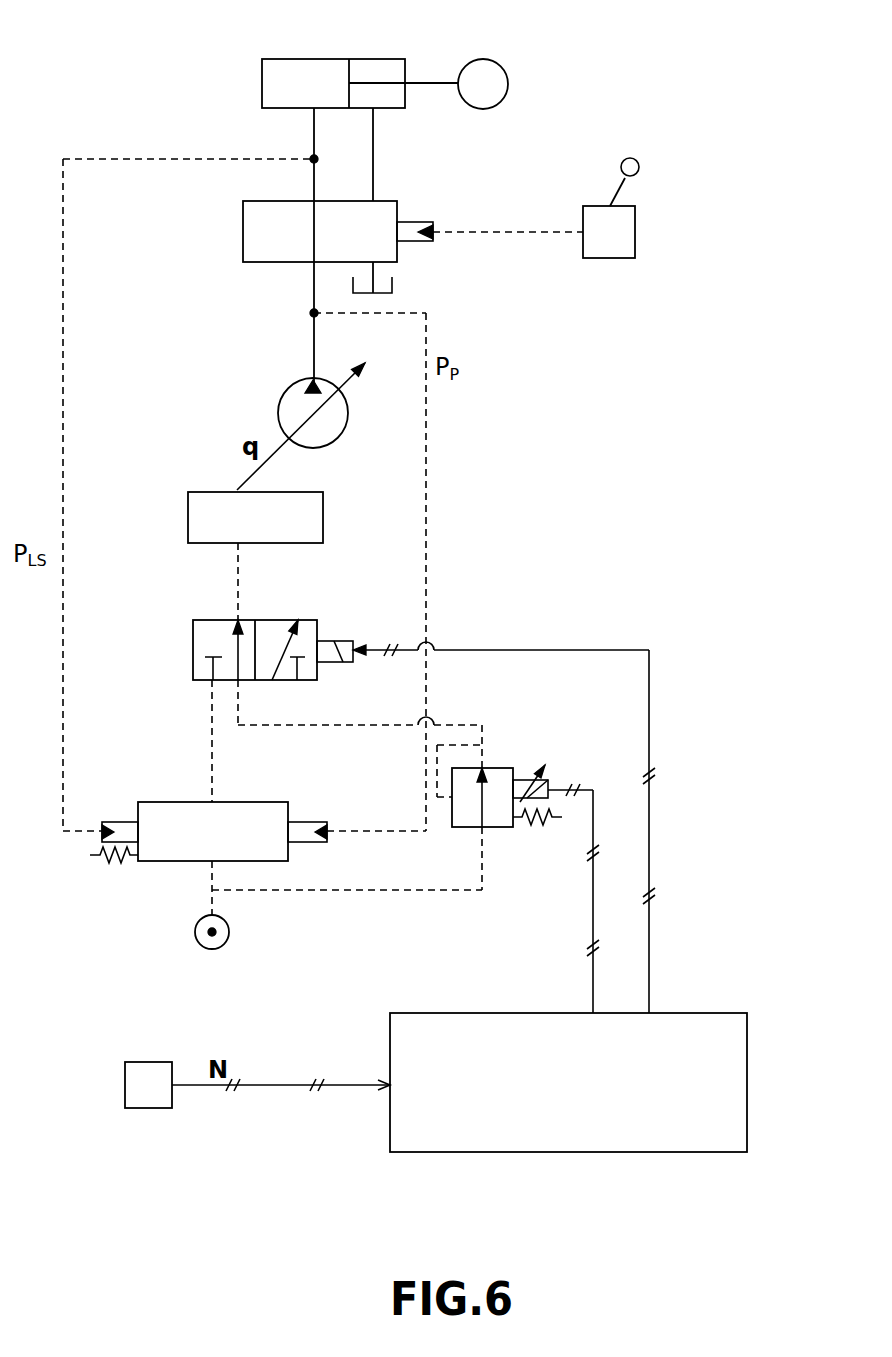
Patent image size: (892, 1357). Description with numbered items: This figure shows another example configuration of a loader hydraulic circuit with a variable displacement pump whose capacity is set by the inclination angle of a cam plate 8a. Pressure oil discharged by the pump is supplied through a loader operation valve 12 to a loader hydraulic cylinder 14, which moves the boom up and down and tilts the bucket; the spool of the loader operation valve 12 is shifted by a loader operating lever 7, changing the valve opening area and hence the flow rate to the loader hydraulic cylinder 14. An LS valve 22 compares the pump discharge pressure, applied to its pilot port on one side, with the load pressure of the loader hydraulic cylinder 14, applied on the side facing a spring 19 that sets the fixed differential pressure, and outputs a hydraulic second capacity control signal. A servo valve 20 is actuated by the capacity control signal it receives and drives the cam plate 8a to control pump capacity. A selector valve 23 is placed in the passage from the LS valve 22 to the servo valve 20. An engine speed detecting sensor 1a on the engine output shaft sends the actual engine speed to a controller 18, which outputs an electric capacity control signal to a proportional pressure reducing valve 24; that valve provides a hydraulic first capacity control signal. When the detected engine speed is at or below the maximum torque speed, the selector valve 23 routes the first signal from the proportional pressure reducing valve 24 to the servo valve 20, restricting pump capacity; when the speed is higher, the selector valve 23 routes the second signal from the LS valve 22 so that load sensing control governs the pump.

The loader hydraulic cylinder 14 is at (321, 59).
The loader operation valve 12 is at (388, 201).
The loader operating lever 7 is at (622, 190).
The cam plate 8a is at (353, 387).
The servo valve 20 is at (306, 489).
The selector valve 23 is at (207, 620).
The LS valve 22 is at (265, 802).
The spring 19 is at (113, 868).
The proportional pressure reducing valve 24 is at (500, 766).
The controller 18 is at (718, 1155).
The engine speed detecting sensor 1a is at (124, 1086).